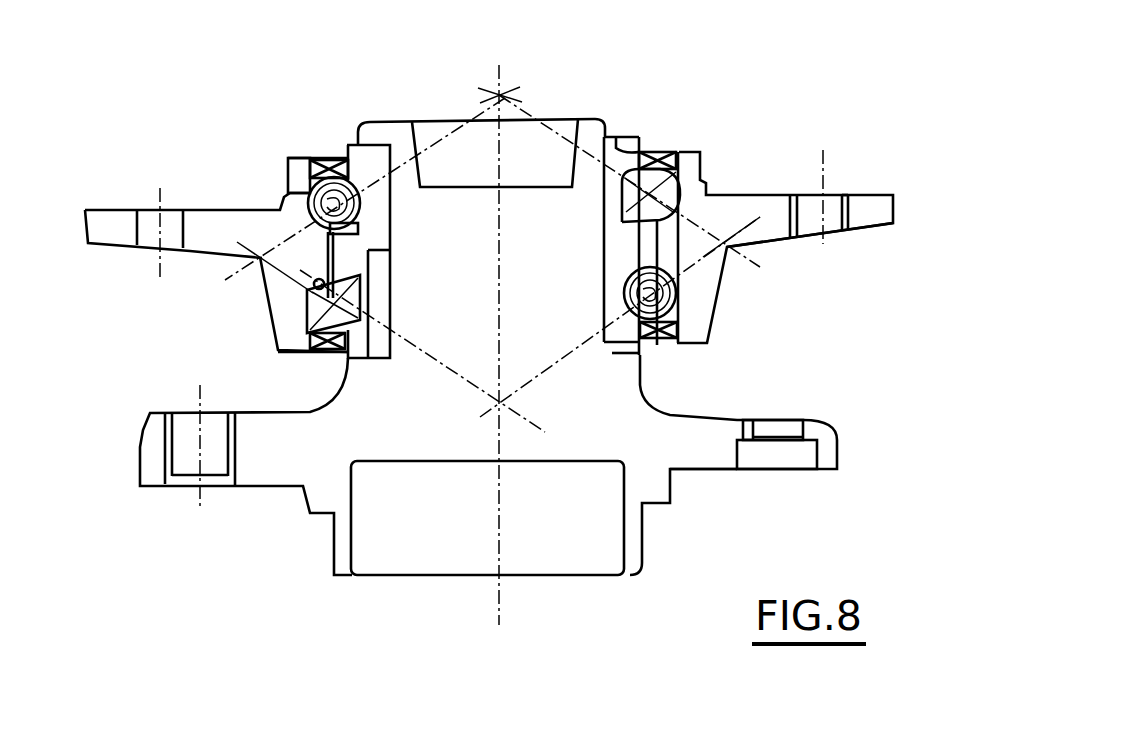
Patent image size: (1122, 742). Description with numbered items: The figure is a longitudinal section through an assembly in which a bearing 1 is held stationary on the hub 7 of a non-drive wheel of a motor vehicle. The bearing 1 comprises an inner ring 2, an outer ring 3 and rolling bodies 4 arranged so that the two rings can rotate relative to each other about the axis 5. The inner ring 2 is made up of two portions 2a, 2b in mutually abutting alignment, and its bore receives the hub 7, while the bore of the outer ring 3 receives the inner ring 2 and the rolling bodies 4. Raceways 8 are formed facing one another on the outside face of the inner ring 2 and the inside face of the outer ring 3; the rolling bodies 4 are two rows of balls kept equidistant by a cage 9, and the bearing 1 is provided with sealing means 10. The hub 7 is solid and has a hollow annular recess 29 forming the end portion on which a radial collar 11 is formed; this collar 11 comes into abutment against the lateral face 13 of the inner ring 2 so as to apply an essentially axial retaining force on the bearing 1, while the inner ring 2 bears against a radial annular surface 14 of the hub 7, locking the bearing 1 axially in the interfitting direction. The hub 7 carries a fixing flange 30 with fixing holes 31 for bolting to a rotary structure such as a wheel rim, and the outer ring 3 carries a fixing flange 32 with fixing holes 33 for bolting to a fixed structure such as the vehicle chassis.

The bearing 1 is at (743, 320).
The inner ring 2 is at (643, 370).
The inner ring portion 2a is at (343, 153).
The inner ring portion 2b is at (332, 368).
The outer ring 3 is at (690, 208).
The rolling bodies 4 is at (288, 194).
The axis 5 is at (499, 580).
The hub 7 is at (623, 418).
The raceways 8 is at (312, 288).
The cage 9 is at (310, 316).
The sealing means 10 is at (661, 341).
The radial collar 11 is at (610, 120).
The lateral face 13 is at (647, 150).
The radial annular surface 14 is at (343, 378).
The hollow annular recess 29 is at (523, 150).
The fixing flange 30 is at (707, 452).
The fixing holes 31 is at (783, 465).
The fixing flange 32 is at (770, 194).
The fixing holes 33 is at (832, 210).